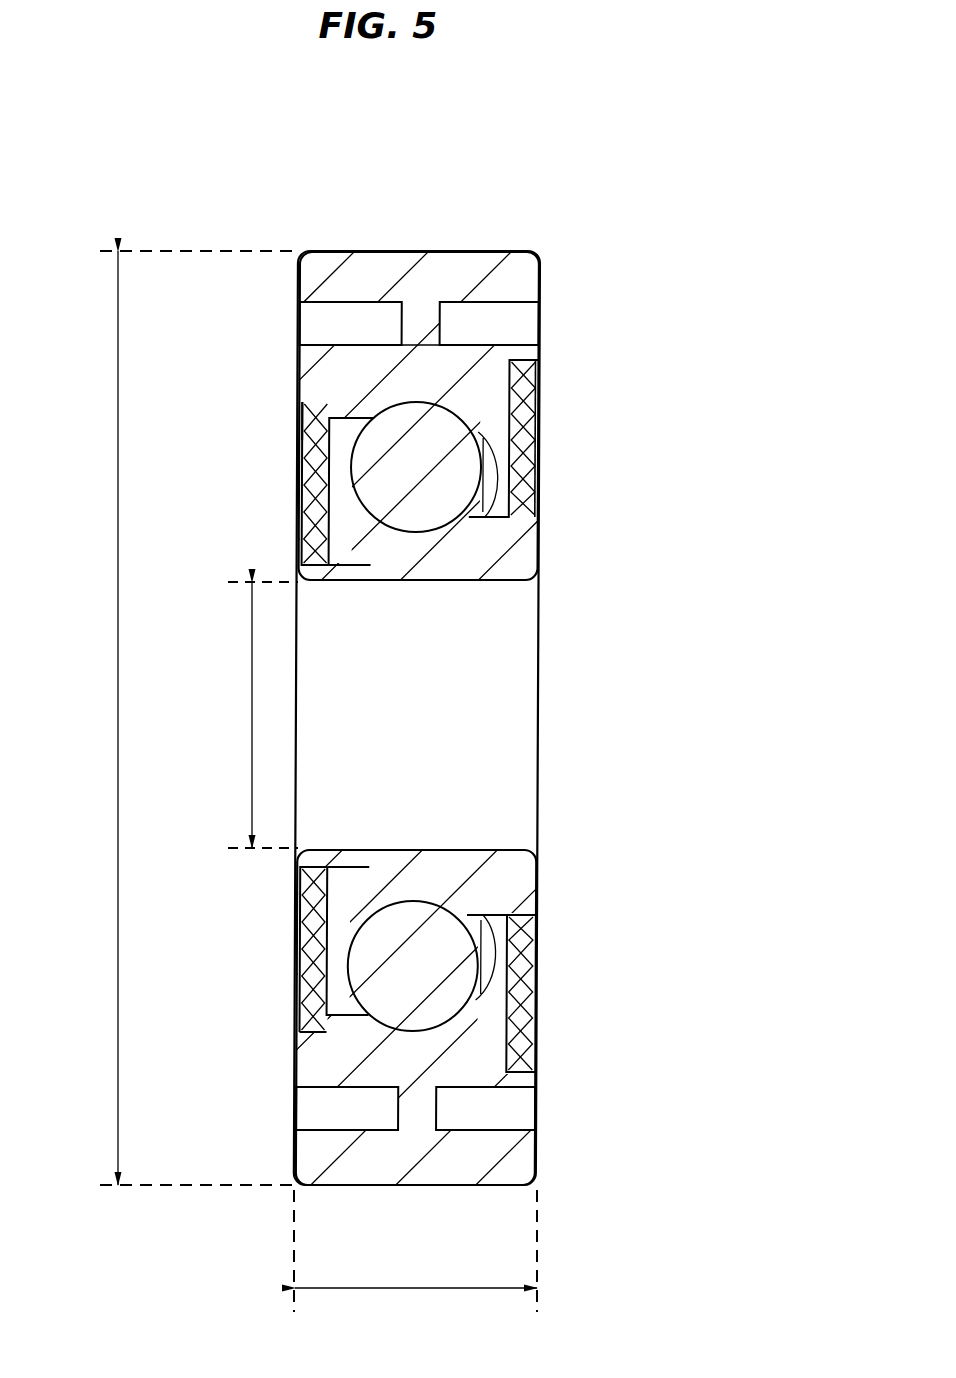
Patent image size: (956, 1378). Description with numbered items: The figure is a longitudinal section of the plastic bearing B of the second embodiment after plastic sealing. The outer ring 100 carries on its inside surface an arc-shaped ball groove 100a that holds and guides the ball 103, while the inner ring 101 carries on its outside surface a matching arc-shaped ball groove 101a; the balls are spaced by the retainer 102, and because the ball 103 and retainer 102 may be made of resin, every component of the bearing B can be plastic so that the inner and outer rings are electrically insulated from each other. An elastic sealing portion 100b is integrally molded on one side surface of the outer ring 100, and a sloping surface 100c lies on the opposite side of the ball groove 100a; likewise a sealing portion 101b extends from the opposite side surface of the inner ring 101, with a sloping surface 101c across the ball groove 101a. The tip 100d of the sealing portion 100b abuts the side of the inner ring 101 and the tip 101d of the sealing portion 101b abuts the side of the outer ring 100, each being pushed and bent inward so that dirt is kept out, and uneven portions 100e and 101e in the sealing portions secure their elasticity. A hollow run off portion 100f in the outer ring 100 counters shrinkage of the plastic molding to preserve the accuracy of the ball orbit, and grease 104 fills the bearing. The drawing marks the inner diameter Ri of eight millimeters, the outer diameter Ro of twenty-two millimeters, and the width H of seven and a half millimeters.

The bearing B is at (405, 237).
The outer ring 100 is at (543, 270).
The ball groove 100a is at (370, 1030).
The sealing portion 100b is at (297, 513).
The sloping surface 100c is at (478, 407).
The tip 100d is at (300, 560).
The uneven portion 100e is at (300, 483).
The run off portion 100f is at (530, 328).
The inner ring 101 is at (530, 568).
The ball groove 101a is at (430, 900).
The sealing portion 101b is at (545, 425).
The sloping surface 101c is at (372, 567).
The tip 101d is at (540, 375).
The uneven portion 101e is at (535, 475).
The retainer 102 is at (540, 915).
The ball 103 is at (387, 430).
The grease 104 is at (340, 467).
The outer diameter Ro is at (185, 718).
The inner diameter Ri is at (252, 715).
The width H is at (415, 1258).